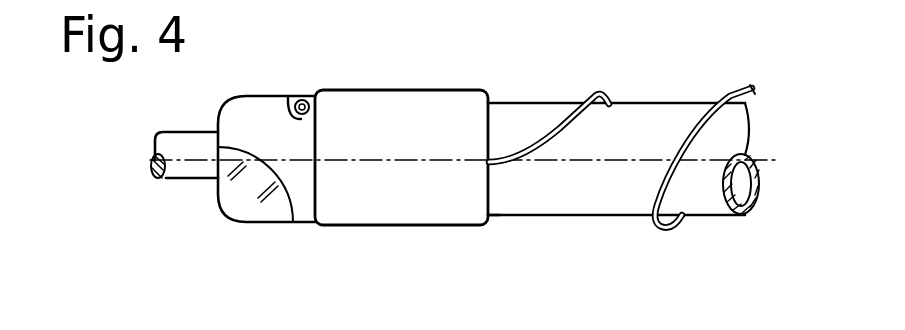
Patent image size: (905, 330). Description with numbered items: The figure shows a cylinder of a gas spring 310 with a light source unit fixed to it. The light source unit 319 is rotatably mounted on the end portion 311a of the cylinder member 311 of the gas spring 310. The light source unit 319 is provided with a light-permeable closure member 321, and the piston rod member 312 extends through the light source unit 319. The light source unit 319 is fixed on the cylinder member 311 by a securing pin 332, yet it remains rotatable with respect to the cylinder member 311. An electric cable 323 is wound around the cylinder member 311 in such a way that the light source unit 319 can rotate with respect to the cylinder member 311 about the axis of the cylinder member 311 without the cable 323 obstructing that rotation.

The gas spring 310 is at (637, 84).
The cylinder member 311 is at (550, 193).
The end portion 311a is at (493, 215).
The piston rod member 312 is at (175, 168).
The light source unit 319 is at (427, 108).
The light-permeable closure member 321 is at (248, 197).
The electric cable 323 is at (688, 200).
The securing pin 332 is at (297, 97).